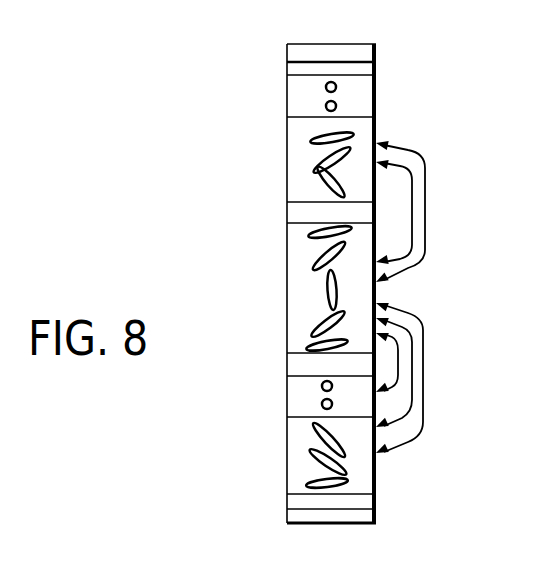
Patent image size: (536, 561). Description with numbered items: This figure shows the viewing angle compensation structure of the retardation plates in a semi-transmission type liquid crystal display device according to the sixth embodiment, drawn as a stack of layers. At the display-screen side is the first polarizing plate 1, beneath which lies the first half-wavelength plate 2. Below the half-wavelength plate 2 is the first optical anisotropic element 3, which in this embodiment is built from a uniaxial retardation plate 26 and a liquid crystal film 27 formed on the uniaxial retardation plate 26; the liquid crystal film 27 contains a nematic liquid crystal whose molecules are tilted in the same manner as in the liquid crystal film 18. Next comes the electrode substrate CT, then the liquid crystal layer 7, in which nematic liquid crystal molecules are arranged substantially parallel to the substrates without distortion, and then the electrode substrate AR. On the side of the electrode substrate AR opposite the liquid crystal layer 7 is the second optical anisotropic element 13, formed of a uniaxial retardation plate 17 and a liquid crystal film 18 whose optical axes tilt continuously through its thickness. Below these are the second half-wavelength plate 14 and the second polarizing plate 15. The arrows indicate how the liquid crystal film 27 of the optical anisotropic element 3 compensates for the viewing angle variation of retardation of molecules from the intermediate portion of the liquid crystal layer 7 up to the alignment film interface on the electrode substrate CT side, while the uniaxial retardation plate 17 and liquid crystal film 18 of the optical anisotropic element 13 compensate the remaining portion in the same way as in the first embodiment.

The first polarizing plate 1 is at (367, 53).
The first half-wavelength plate 2 is at (367, 67).
The first optical anisotropic element 3 is at (233, 75).
The uniaxial retardation plate 26 is at (288, 99).
The liquid crystal film 27 is at (288, 155).
The second electrode substrate CT is at (287, 215).
The liquid crystal layer 7 is at (288, 290).
The first electrode substrate AR is at (287, 365).
The second optical anisotropic element 13 is at (230, 370).
The uniaxial retardation plate 17 is at (288, 398).
The liquid crystal film 18 is at (288, 458).
The second half-wavelength plate 14 is at (368, 500).
The second polarizing plate 15 is at (368, 517).